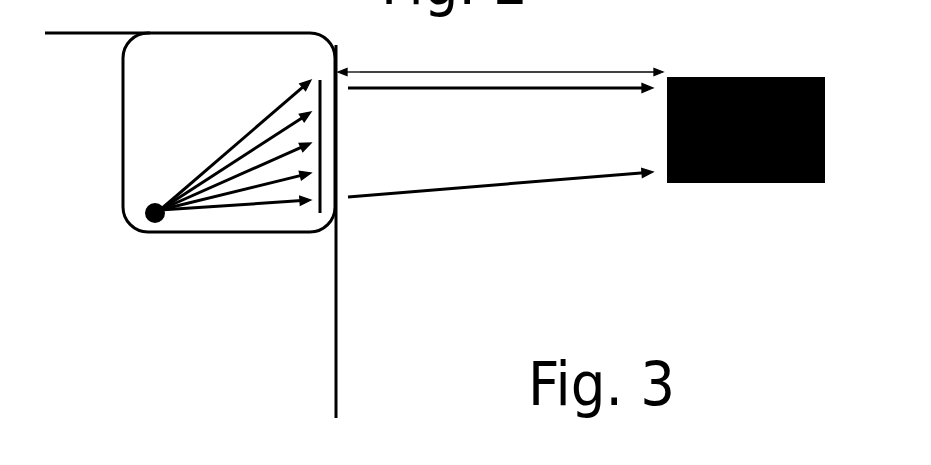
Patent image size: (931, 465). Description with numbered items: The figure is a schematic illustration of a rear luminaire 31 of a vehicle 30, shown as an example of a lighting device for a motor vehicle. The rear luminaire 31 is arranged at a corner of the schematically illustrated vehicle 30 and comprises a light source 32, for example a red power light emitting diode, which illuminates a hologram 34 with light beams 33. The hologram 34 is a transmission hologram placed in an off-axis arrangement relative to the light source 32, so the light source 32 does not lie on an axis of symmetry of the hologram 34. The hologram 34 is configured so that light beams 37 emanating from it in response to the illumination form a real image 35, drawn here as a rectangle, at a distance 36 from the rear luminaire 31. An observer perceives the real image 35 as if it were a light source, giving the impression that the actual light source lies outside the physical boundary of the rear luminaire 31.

The vehicle 30 is at (336, 374).
The rear luminaire 31 is at (235, 32).
The light source 32 is at (145, 200).
The light beams 33 is at (237, 138).
The hologram 34 is at (315, 98).
The real image 35 is at (725, 77).
The distance 36 is at (585, 72).
The light beams 37 is at (495, 183).